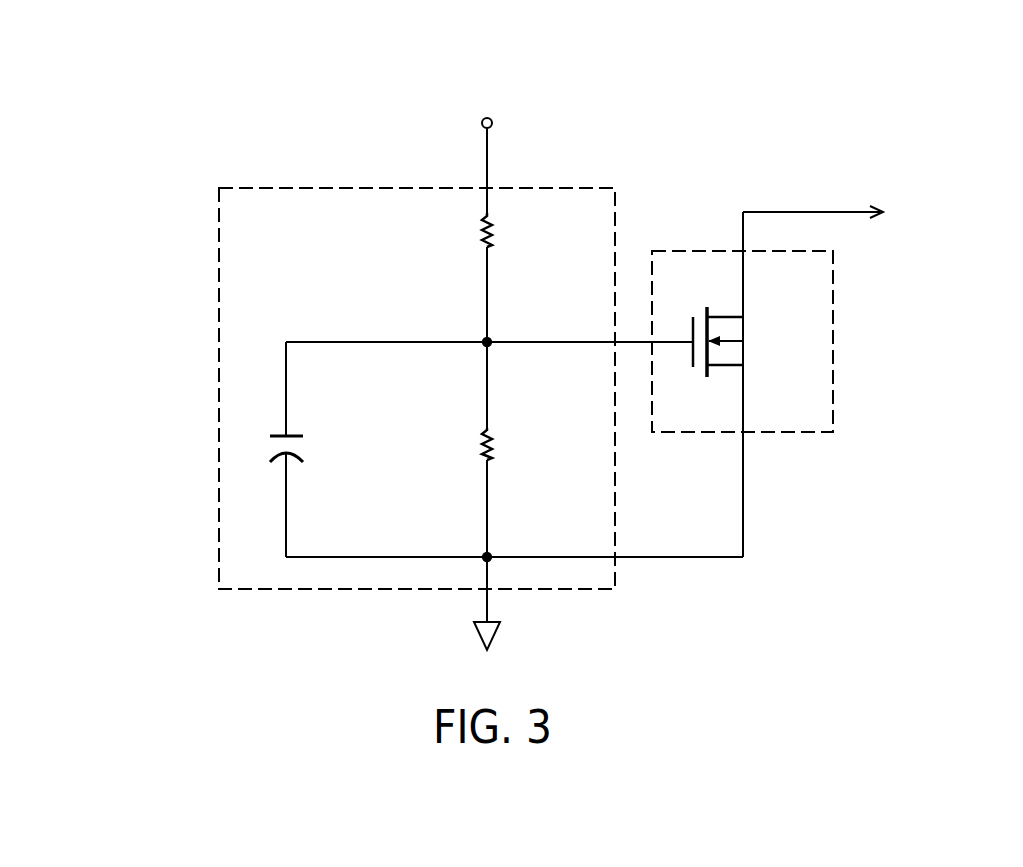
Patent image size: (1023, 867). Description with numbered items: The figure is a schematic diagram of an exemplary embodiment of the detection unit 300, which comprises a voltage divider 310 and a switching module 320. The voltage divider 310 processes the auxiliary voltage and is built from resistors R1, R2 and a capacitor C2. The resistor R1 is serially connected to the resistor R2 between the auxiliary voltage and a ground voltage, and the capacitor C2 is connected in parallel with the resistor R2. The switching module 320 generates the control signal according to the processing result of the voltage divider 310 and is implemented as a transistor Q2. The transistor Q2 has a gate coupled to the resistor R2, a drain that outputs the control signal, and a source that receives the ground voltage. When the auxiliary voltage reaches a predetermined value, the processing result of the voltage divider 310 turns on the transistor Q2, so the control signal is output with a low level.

The detection unit 300 is at (566, 350).
The voltage divider 310 is at (431, 388).
The switching module 320 is at (787, 384).
The resistor R1 is at (500, 234).
The resistor R2 is at (500, 450).
The capacitor C2 is at (305, 447).
The transistor Q2 is at (751, 342).